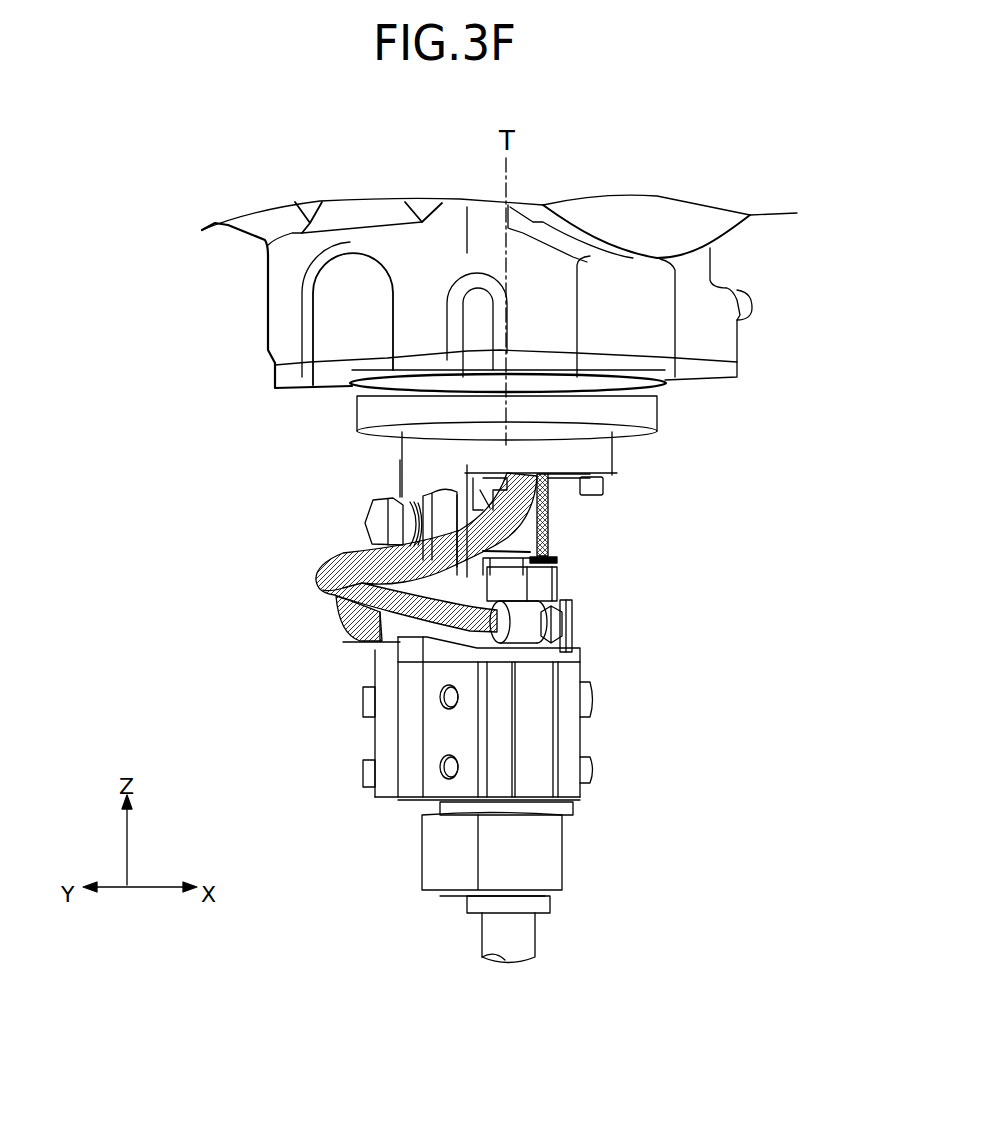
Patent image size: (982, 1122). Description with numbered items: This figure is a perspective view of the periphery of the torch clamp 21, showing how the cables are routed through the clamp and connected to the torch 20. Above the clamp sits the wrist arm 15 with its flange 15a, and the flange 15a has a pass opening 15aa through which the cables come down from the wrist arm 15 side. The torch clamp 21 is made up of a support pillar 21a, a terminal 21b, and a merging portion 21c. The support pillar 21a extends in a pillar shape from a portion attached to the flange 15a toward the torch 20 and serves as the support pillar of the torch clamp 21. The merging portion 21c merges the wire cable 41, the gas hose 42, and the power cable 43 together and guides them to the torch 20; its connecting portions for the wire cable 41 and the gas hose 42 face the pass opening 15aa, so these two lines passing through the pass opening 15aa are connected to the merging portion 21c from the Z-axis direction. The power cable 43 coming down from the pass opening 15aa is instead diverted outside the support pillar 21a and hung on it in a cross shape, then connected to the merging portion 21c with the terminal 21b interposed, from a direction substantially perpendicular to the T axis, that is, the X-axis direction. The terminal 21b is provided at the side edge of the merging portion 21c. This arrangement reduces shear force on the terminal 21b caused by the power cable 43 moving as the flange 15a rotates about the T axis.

The wrist arm 15 is at (757, 248).
The flange 15a is at (647, 413).
The pass opening 15aa is at (560, 481).
The gas hose 42 is at (551, 528).
The wire cable 41 is at (545, 543).
The merging portion 21c is at (568, 608).
The terminal 21b is at (553, 625).
The power cable 43 is at (318, 562).
The support pillar 21a is at (343, 623).
The torch clamp 21 is at (300, 683).
The torch 20 is at (527, 930).